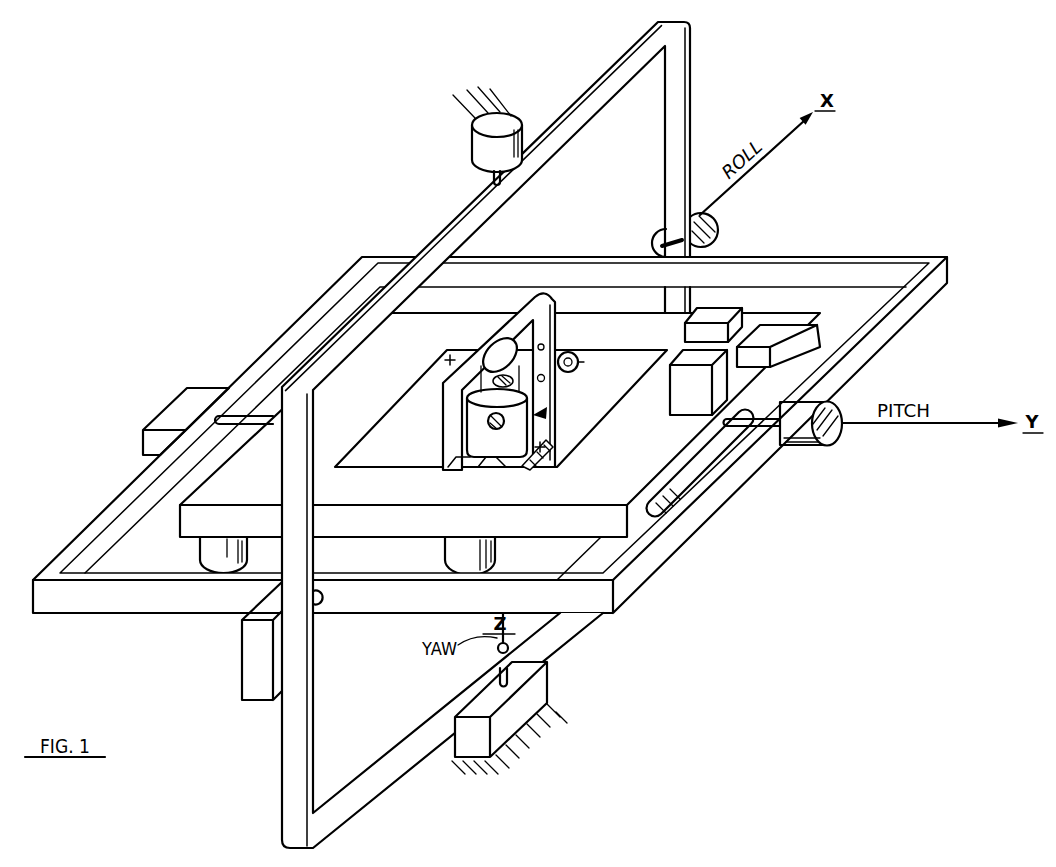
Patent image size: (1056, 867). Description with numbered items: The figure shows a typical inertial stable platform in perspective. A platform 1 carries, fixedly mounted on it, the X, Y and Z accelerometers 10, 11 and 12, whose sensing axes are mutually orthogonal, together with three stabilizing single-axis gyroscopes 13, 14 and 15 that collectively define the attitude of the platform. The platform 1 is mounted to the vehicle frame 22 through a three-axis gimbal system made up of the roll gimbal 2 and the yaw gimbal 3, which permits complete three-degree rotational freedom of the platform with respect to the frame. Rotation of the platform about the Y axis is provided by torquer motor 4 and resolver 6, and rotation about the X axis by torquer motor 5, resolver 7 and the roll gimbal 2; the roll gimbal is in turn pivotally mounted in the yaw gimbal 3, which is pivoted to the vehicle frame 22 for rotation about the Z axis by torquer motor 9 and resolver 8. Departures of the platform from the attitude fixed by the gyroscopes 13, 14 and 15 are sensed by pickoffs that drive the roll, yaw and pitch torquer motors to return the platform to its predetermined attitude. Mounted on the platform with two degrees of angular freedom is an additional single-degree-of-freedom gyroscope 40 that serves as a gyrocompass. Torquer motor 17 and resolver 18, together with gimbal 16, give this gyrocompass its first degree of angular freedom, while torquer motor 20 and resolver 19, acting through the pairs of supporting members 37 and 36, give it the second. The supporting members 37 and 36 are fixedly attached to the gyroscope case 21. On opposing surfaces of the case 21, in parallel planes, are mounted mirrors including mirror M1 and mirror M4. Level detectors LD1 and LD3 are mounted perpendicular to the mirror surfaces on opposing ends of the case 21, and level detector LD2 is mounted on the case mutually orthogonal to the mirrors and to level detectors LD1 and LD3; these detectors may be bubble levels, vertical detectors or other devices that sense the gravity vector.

The platform 1 is at (350, 494).
The roll gimbal 2 is at (387, 609).
The yaw gimbal 3 is at (283, 504).
The torquer motor 4 is at (178, 405).
The torquer motor 5 is at (262, 652).
The resolver 6 is at (831, 442).
The resolver 7 is at (718, 229).
The resolver 8 is at (487, 136).
The torquer motor 9 is at (522, 702).
The X accelerometer 10 is at (770, 323).
The Y accelerometer 11 is at (712, 312).
The Z accelerometer 12 is at (687, 402).
The gyroscope 13 is at (222, 552).
The gyroscope 14 is at (455, 550).
The gyroscope 15 is at (817, 542).
The gimbal 16 is at (455, 403).
The torquer motor 17 is at (452, 463).
The resolver 18 is at (579, 363).
The resolver 19 is at (494, 343).
The torquer motor 20 is at (547, 453).
The gyroscope case 21 is at (523, 433).
The vehicle frame 22 is at (509, 739).
The supporting members 36 is at (447, 361).
The supporting members 37 is at (484, 462).
The gyroscope 40 is at (548, 413).
The level detector LD1 is at (543, 346).
The level detector LD2 is at (498, 415).
The level detector LD3 is at (500, 463).
The mirror M1 is at (526, 396).
The mirror M4 is at (545, 445).